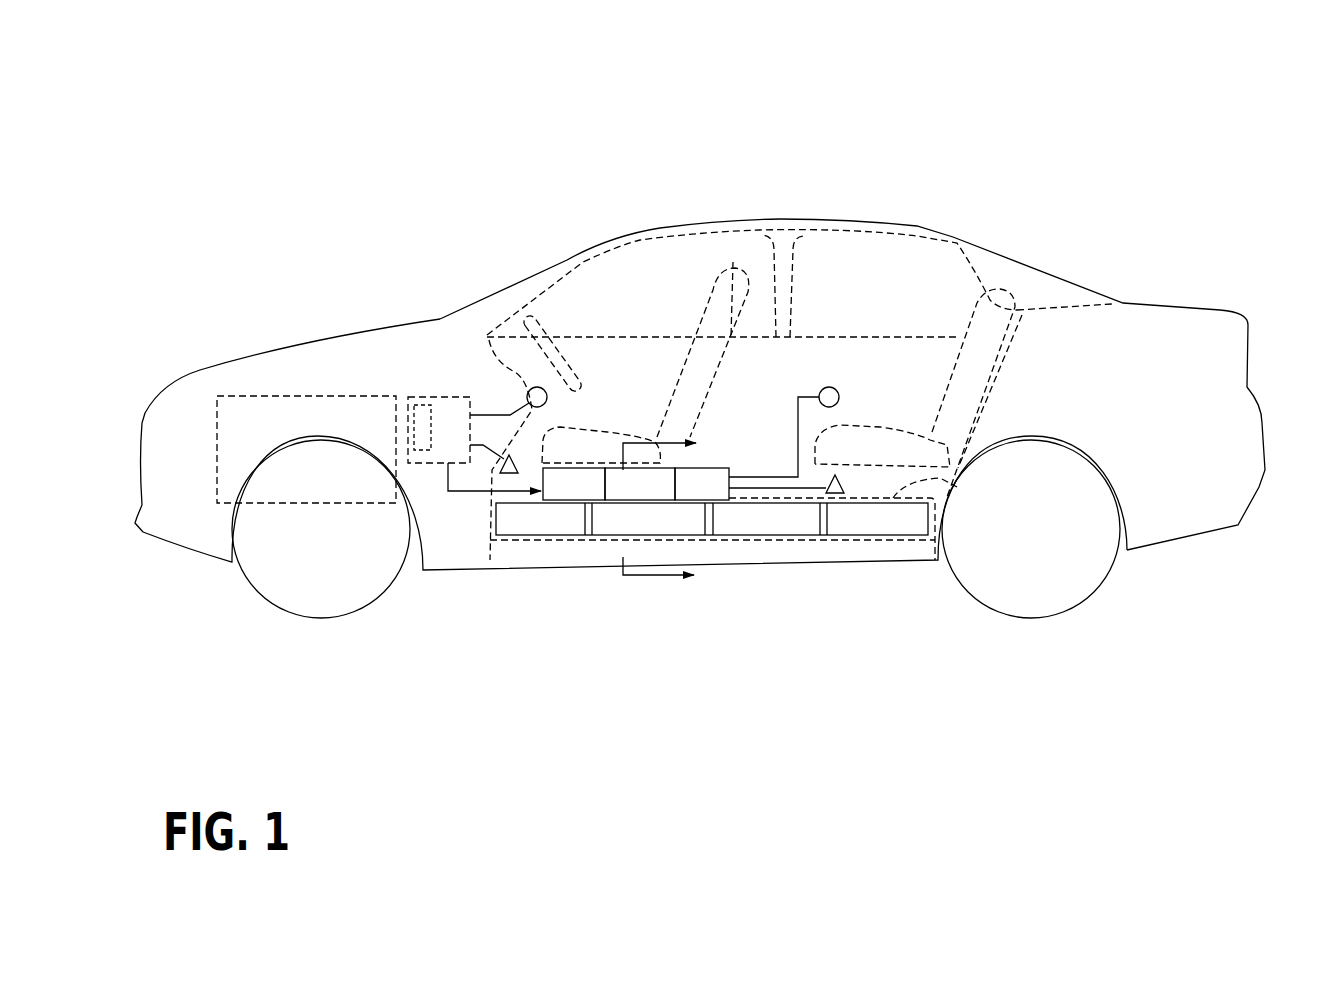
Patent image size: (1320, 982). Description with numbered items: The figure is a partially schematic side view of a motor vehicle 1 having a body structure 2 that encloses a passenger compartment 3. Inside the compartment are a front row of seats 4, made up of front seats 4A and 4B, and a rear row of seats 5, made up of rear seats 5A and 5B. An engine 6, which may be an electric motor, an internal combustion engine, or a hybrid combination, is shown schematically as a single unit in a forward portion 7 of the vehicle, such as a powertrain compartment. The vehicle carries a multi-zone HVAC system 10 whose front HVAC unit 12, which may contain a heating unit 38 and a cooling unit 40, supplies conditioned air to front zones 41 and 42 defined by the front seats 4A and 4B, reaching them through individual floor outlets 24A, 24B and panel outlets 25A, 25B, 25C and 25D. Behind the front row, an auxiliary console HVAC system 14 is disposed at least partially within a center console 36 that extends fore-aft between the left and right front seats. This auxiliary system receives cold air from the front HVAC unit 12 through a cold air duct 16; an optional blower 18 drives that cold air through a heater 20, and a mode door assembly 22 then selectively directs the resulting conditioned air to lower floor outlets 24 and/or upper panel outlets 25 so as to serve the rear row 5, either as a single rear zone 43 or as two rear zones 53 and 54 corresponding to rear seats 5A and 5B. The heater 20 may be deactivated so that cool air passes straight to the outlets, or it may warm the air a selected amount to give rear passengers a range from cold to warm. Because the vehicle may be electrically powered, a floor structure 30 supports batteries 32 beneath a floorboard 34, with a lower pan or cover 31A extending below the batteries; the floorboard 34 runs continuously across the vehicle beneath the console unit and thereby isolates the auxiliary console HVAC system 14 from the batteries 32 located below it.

The motor vehicle 1 is at (370, 188).
The body structure 2 is at (413, 322).
The passenger compartment/interior space 3 is at (622, 237).
The front row of seats 4 is at (675, 265).
The front seat 4A is at (718, 236).
The front seat 4B is at (733, 262).
The rear row of seats 5 is at (885, 267).
The rear seat 5A is at (1004, 343).
The rear seat 5B is at (1000, 298).
The engine 6 is at (242, 353).
The forward portion 7 is at (308, 368).
The multi-zone HVAC system 10 is at (446, 386).
The front HVAC unit 12 is at (420, 397).
The auxiliary console HVAC system 14 is at (507, 540).
The cold air duct 16 is at (472, 491).
The blower 18 is at (587, 487).
The heater 20 is at (620, 483).
The mode door assembly 22 is at (712, 480).
The floor outlets 24 is at (836, 495).
The floor outlet 24A is at (409, 590).
The floor outlet 24B is at (505, 475).
The panel outlets 25 is at (837, 389).
The panel outlet 25A is at (481, 307).
The panel outlet 25B is at (481, 307).
The panel outlet 25C is at (481, 307).
The panel outlet 25D is at (528, 392).
The floor structure 30 is at (917, 540).
The lower pan or cover 31A is at (825, 537).
The batteries 32 is at (535, 520).
The floorboard 34 is at (963, 483).
The center console 36 is at (600, 442).
The heating unit 38 is at (402, 435).
The cooling unit 40 is at (392, 437).
The first front zone 41 is at (615, 174).
The second front zone 42 is at (638, 275).
The rear zone 43 is at (988, 199).
The rear zone 53 is at (988, 199).
The rear zone 54 is at (920, 277).